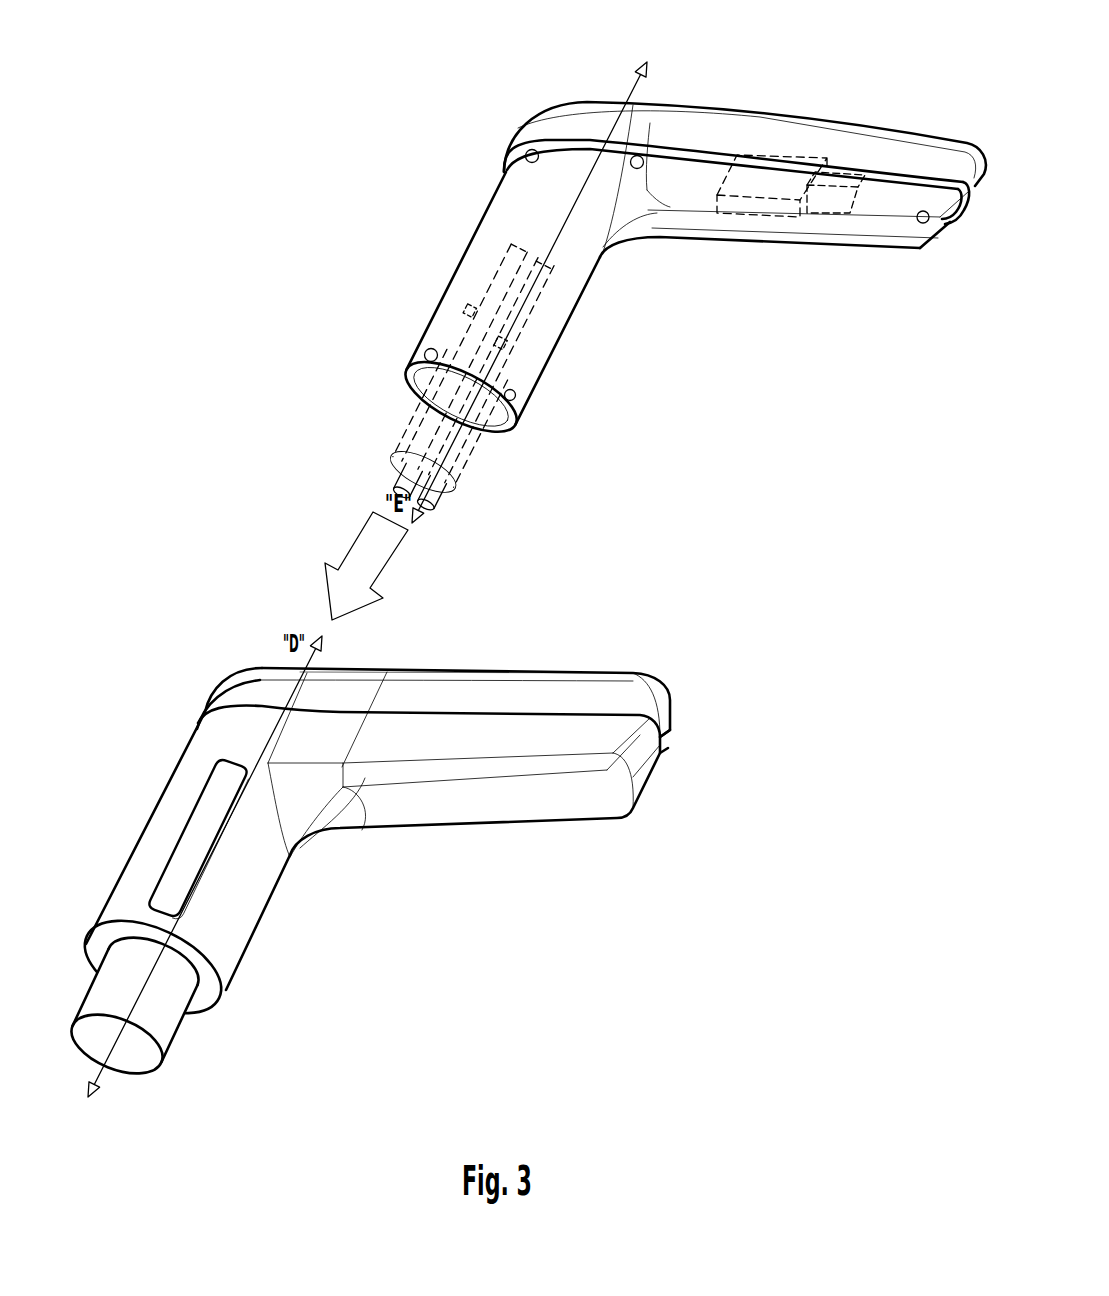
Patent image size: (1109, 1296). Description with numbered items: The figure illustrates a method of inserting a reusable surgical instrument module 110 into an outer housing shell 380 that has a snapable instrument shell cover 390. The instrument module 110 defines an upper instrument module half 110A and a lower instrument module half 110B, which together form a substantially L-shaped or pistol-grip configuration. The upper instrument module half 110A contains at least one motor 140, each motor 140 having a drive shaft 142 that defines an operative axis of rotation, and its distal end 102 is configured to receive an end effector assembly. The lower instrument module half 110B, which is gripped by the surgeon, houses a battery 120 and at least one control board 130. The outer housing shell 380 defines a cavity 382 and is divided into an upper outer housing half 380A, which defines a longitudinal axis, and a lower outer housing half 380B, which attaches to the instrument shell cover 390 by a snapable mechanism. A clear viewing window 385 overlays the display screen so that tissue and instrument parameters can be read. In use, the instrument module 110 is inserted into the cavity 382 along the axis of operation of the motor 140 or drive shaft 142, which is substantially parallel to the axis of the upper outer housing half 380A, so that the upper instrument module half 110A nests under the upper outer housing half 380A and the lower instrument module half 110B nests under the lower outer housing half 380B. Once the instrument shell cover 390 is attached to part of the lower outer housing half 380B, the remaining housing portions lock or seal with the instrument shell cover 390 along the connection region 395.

The instrument module 110 is at (629, 289).
The upper instrument module half 110A is at (450, 284).
The lower instrument module half 110B is at (708, 174).
The distal end 102 is at (413, 403).
The battery 120 is at (840, 207).
The control board 130 is at (765, 193).
The motor 140 is at (527, 293).
The drive shaft 142 is at (427, 503).
The outer housing shell 380 is at (426, 849).
The upper outer housing half 380A is at (225, 876).
The lower outer housing half 380B is at (526, 756).
The cavity 382 is at (333, 663).
The viewing window 385 is at (170, 891).
The instrument shell cover 390 is at (883, 145).
The connection region 395 is at (667, 737).